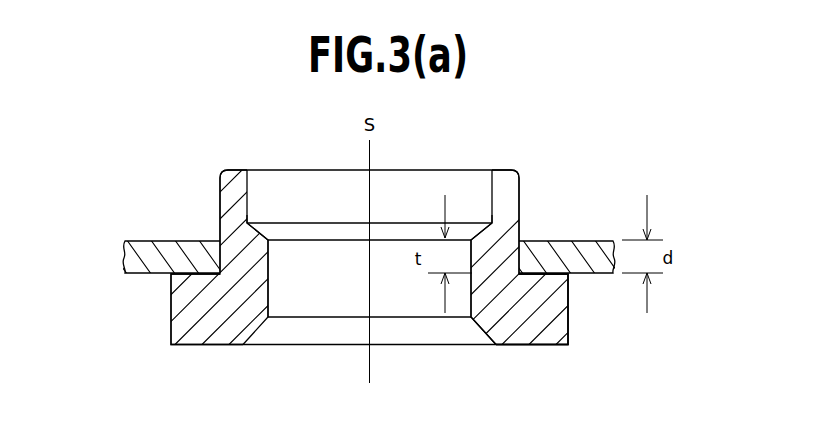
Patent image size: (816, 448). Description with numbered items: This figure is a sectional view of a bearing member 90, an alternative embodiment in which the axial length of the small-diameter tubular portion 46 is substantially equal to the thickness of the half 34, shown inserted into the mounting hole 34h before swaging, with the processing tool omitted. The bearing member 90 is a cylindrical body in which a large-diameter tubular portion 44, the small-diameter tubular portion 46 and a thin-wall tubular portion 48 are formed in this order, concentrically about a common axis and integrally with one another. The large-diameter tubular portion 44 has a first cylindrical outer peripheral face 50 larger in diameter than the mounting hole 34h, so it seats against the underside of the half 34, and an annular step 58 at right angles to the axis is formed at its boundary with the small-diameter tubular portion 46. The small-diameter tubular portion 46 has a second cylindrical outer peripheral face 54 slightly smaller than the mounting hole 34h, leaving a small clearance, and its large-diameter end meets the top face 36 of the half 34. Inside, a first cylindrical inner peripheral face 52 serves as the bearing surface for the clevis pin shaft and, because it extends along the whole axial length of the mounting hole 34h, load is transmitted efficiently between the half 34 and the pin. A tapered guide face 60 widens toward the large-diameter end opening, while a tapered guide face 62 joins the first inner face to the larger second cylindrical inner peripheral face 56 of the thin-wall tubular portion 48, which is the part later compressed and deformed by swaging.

The bearing member 90 is at (550, 158).
The second cylindrical outer peripheral face 54 is at (218, 196).
The thin-wall tubular portion 48 is at (507, 197).
The tapered guide face 62 is at (262, 228).
The second cylindrical inner peripheral face 56 is at (490, 199).
The first cylindrical inner peripheral face 52 is at (268, 281).
The tapered guide face 60 is at (486, 330).
The annular step 58 is at (178, 266).
The first cylindrical outer peripheral face 50 is at (569, 327).
The large-diameter tubular portion 44 is at (538, 302).
The small-diameter tubular portion 46 is at (508, 259).
The half 34 is at (142, 262).
The mounting hole 34h is at (232, 246).
The top face 36 is at (572, 240).